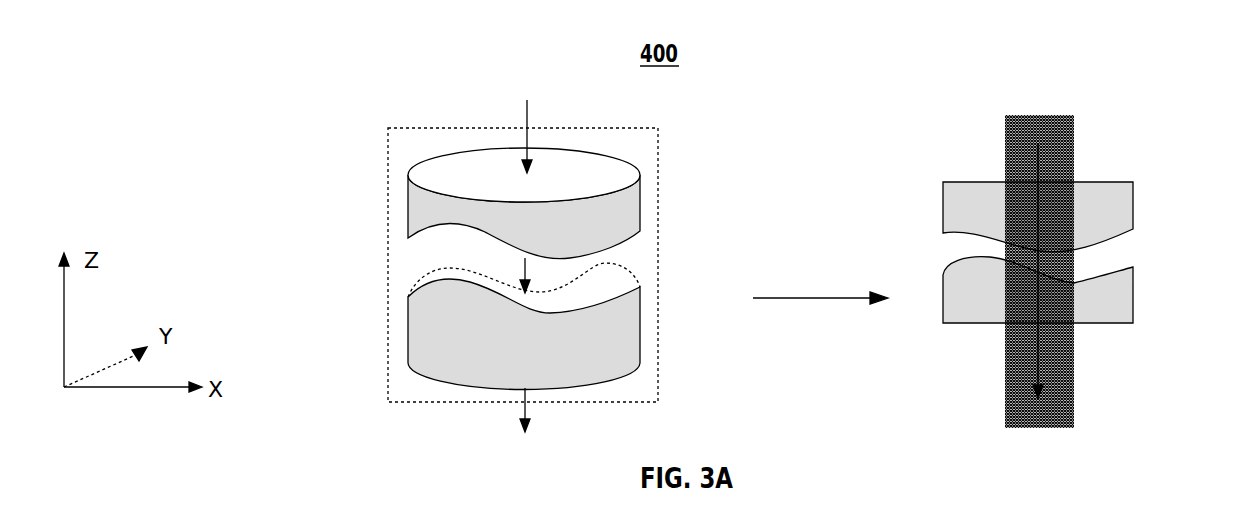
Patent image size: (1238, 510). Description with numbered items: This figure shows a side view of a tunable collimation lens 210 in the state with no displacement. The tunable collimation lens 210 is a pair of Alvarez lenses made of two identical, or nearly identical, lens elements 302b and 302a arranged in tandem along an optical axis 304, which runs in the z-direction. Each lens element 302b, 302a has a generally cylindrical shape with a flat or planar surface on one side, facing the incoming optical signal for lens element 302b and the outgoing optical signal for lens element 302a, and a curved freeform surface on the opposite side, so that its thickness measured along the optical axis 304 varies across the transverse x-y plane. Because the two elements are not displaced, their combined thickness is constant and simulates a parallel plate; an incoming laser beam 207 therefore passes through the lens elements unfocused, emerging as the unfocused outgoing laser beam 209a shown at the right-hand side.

The tunable collimation lens 210 is at (388, 312).
The lens element 302b is at (640, 205).
The lens element 302a is at (640, 337).
The optical axis 304 is at (529, 122).
The incoming laser beam 207 is at (1073, 143).
The outgoing laser beam 209a is at (1040, 374).